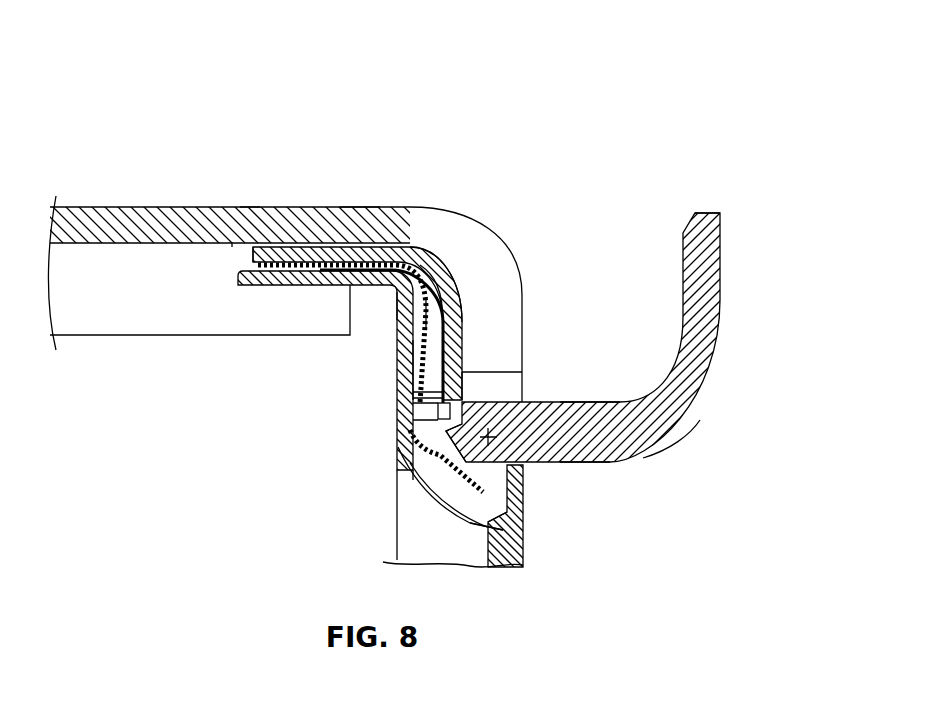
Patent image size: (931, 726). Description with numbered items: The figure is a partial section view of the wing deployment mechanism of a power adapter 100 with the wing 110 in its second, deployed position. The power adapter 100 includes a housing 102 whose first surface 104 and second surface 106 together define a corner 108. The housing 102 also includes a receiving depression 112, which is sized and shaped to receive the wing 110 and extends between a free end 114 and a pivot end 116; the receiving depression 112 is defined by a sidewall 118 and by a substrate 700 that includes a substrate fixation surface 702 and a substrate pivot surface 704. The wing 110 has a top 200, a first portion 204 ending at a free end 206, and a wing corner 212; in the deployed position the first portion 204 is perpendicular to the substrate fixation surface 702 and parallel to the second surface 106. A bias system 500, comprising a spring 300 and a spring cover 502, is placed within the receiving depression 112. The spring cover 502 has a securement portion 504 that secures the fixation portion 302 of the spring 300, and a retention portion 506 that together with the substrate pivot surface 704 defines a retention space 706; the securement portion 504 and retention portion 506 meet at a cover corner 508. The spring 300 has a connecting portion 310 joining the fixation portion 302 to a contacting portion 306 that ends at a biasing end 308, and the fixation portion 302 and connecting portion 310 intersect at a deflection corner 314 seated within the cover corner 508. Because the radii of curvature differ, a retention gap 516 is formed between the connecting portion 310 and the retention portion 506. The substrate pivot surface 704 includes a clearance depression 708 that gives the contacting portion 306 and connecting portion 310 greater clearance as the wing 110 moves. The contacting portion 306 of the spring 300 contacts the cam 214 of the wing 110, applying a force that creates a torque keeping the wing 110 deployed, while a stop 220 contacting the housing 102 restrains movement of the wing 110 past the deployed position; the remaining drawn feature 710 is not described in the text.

The power adapter 100 is at (608, 108).
The housing 102 is at (84, 207).
The first surface 104 is at (137, 207).
The second surface 106 is at (523, 566).
The corner 108 is at (447, 212).
The wing 110 is at (748, 374).
The receiving depression 112 is at (346, 220).
The free end 114 is at (246, 220).
The pivot end 116 is at (475, 527).
The sidewall 118 is at (366, 213).
The top 200 is at (722, 310).
The first portion 204 is at (722, 260).
The free end 206 is at (607, 402).
The wing corner 212 is at (684, 422).
The cam 214 is at (422, 499).
The stop 220 is at (422, 422).
The spring 300 is at (405, 249).
The fixation portion 302 is at (294, 262).
The contacting portion 306 is at (485, 455).
The biasing end 308 is at (507, 516).
The connecting portion 310 is at (446, 330).
The deflection corner 314 is at (440, 284).
The bias system 500 is at (250, 253).
The spring cover 502 is at (430, 300).
The securement portion 504 is at (256, 262).
The retention portion 506 is at (432, 355).
The cover corner 508 is at (430, 256).
The retention gap 516 is at (459, 380).
The substrate 700 is at (293, 286).
The substrate fixation surface 702 is at (246, 290).
The substrate pivot surface 704 is at (395, 296).
The retention space 706 is at (417, 376).
The clearance depression 708 is at (420, 413).
The lower portion 710 is at (411, 467).